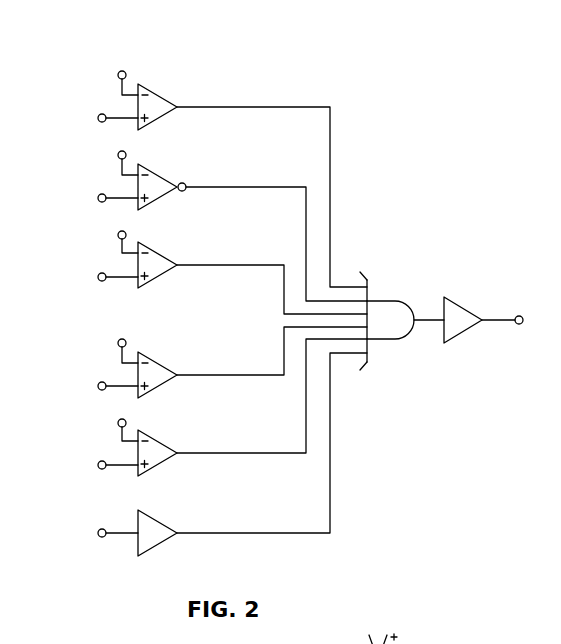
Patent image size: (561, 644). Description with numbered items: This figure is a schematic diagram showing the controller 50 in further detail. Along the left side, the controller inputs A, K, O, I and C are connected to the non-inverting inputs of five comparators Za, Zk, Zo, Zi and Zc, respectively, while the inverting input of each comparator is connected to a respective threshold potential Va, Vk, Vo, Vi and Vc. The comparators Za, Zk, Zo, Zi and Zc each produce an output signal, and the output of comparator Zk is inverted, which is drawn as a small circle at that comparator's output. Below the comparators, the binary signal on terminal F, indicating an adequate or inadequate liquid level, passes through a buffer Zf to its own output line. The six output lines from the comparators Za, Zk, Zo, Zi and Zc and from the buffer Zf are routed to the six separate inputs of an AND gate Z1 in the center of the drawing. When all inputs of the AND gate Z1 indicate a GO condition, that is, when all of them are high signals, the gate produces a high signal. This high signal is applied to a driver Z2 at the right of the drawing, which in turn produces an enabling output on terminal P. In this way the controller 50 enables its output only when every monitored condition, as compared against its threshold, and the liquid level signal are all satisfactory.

The controller 50 is at (312, 76).
The comparator Za is at (158, 95).
The comparator Zk is at (158, 175).
The comparator Zo is at (158, 253).
The comparator Zi is at (158, 363).
The comparator Zc is at (158, 441).
The buffer Zf is at (159, 521).
The AND gate Z1 is at (380, 301).
The driver Z2 is at (464, 308).